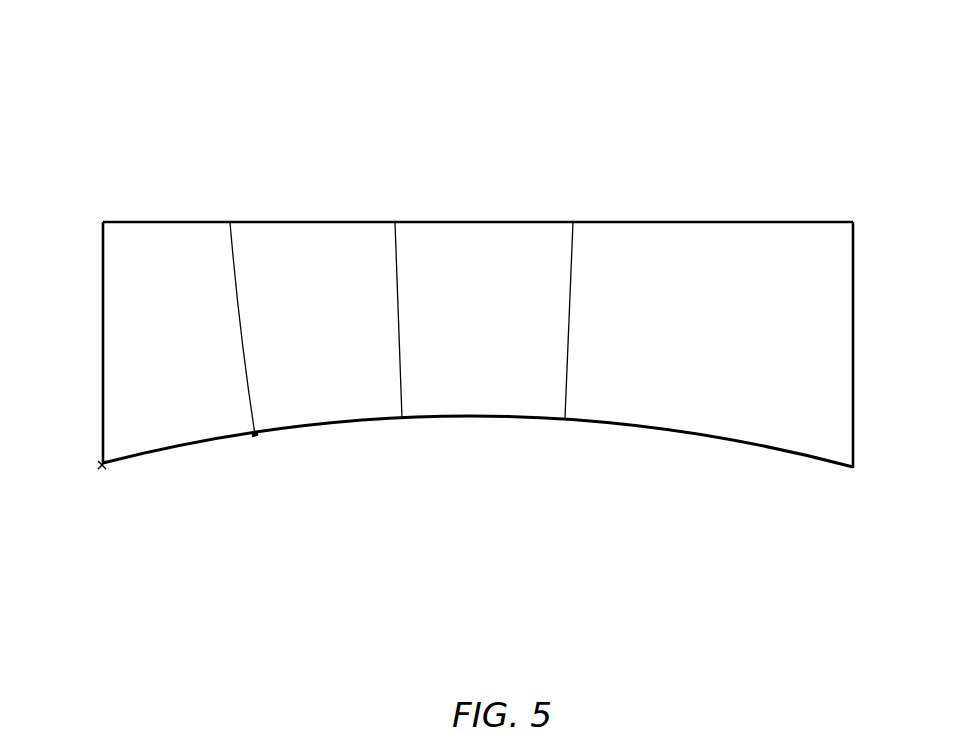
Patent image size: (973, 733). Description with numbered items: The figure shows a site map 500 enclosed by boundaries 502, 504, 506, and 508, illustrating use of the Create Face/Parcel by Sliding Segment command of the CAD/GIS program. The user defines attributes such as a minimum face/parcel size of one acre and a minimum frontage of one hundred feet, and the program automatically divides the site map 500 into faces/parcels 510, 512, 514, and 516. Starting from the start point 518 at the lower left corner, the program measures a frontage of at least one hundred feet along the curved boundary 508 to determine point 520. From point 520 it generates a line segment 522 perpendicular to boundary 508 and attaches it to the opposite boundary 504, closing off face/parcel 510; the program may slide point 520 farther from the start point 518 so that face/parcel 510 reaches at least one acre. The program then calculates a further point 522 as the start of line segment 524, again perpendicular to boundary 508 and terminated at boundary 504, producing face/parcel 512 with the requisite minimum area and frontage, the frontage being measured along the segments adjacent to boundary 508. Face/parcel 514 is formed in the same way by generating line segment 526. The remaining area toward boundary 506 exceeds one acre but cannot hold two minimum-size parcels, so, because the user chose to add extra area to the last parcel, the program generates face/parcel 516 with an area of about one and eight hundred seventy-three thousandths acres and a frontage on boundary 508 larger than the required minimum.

The site map 500 is at (387, 88).
The boundary 502 is at (113, 366).
The boundary 504 is at (702, 222).
The boundary 506 is at (862, 370).
The boundary 508 is at (575, 423).
The face/parcel 510 is at (164, 253).
The face/parcel 512 is at (330, 262).
The face/parcel 514 is at (438, 276).
The face/parcel 516 is at (652, 325).
The start point 518 is at (106, 469).
The point 520 is at (255, 435).
The line segment 522 is at (242, 315).
The line segment 524 is at (398, 352).
The line segment 526 is at (569, 337).